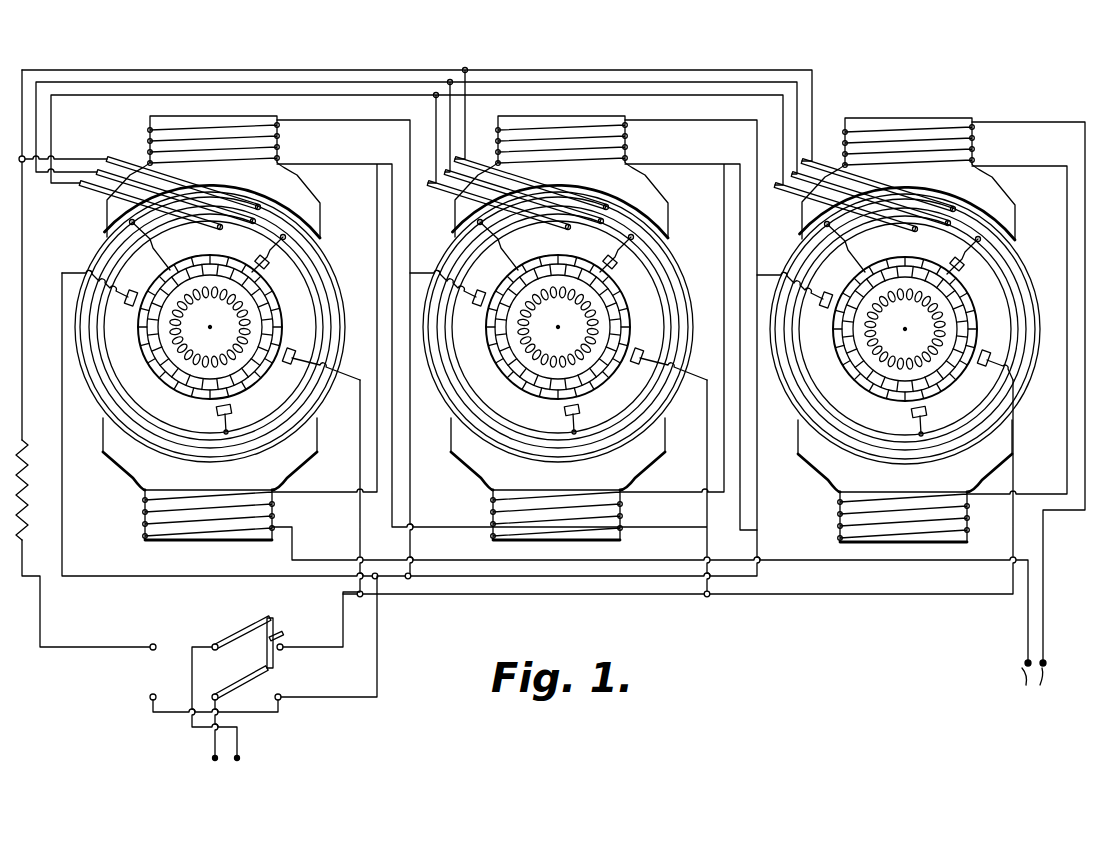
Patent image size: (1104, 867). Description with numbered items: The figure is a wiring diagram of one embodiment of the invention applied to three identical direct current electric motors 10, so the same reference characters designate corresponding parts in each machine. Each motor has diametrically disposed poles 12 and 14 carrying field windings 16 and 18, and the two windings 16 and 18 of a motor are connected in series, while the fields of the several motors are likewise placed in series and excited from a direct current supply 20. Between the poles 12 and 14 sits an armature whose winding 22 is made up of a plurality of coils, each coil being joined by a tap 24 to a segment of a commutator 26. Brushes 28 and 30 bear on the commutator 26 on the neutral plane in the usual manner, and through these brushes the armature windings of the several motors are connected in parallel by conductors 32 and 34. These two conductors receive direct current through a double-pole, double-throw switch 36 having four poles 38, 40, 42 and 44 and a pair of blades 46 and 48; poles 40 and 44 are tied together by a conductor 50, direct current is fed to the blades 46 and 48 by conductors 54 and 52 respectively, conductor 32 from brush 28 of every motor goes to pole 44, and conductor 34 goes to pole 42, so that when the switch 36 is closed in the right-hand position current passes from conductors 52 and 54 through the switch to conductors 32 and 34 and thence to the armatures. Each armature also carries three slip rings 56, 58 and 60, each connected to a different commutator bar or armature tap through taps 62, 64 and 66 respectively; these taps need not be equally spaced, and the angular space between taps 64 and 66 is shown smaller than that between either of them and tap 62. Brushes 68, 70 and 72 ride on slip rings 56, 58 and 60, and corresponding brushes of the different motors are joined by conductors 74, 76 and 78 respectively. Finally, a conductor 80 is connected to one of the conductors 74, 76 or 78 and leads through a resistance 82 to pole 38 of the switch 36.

The direct current electric motors 10 is at (328, 232).
The pole 12 is at (302, 204).
The pole 14 is at (295, 458).
The field winding 16 is at (230, 152).
The field winding 18 is at (192, 488).
The direct current supply 20 is at (1034, 686).
The armature winding 22 is at (240, 345).
The tap 24 is at (215, 272).
The commutator 26 is at (205, 400).
The brush 28 is at (129, 306).
The brush 30 is at (291, 350).
The conductor 32 is at (64, 527).
The conductor 34 is at (358, 527).
The double-pole, double-throw switch 36 is at (276, 628).
The pole 38 is at (156, 644).
The pole 40 is at (153, 694).
The pole 42 is at (283, 650).
The pole 44 is at (283, 700).
The blade 46 is at (238, 636).
The blade 48 is at (234, 688).
The conductor 50 is at (168, 714).
The conductor 52 is at (212, 752).
The conductor 54 is at (240, 752).
The slip ring 56 is at (270, 268).
The slip ring 58 is at (322, 282).
The slip ring 60 is at (322, 256).
The tap 62 is at (226, 414).
The tap 64 is at (266, 248).
The tap 66 is at (150, 250).
The brush 68 is at (96, 190).
The brush 70 is at (98, 164).
The brush 72 is at (115, 165).
The conductor 74 is at (93, 95).
The conductor 76 is at (152, 70).
The conductor 78 is at (194, 82).
The conductor 80 is at (24, 252).
The resistance 82 is at (24, 448).